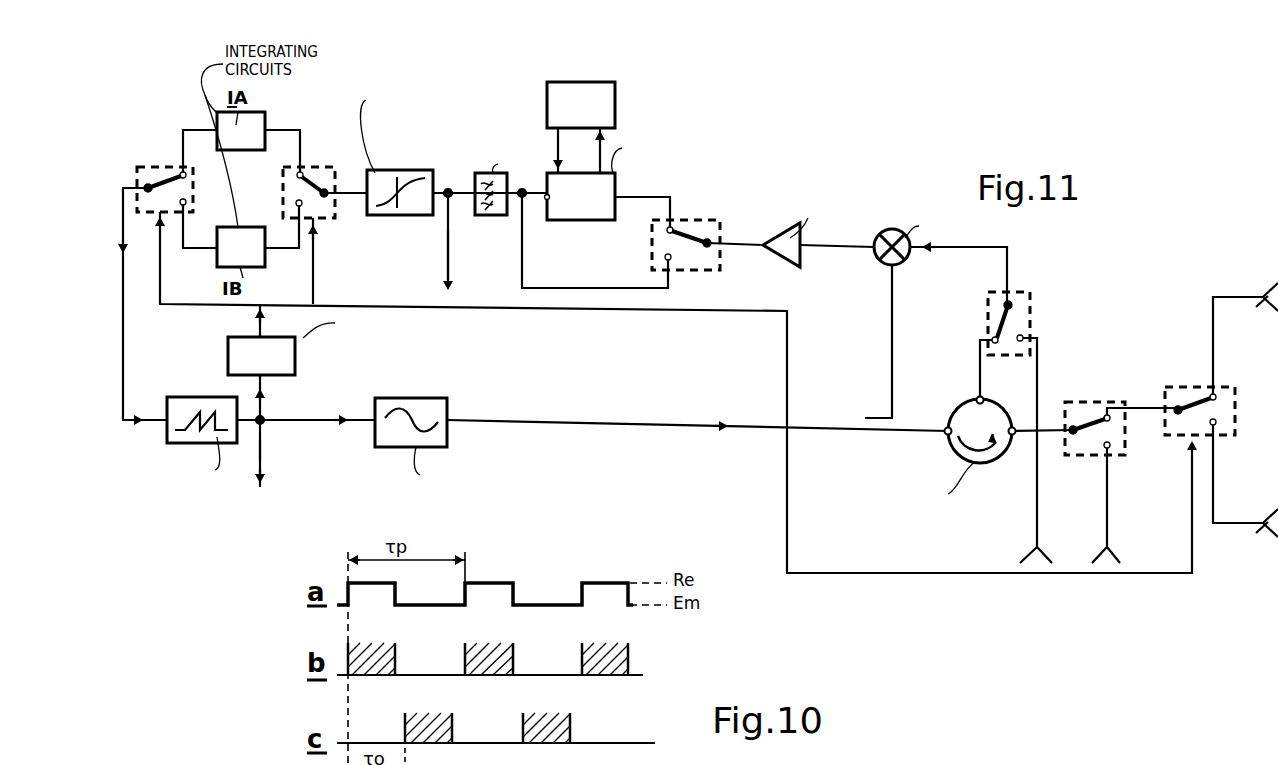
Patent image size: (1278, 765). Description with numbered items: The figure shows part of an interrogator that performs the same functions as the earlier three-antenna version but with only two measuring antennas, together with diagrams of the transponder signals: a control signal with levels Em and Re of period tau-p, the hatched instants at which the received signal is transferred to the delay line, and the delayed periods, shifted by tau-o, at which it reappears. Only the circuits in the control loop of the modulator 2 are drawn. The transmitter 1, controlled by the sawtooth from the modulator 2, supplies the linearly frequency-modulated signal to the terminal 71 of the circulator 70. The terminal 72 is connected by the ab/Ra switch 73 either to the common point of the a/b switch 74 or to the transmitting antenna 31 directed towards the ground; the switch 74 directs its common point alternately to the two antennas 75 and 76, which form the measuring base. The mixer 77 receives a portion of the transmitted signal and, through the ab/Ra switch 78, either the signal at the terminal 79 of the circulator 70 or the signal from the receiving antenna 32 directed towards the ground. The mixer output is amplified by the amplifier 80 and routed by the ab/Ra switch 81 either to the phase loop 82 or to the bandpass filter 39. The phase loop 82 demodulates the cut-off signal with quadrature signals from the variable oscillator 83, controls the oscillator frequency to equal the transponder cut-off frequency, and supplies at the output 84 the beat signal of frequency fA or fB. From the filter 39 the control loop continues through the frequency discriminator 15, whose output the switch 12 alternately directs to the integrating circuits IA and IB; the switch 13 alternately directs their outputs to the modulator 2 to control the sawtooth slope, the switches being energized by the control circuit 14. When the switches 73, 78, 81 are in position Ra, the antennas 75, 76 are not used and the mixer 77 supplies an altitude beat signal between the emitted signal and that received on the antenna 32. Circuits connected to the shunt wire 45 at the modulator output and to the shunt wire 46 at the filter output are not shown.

The transmitter 1 is at (410, 410).
The modulator 2 is at (188, 405).
The switch 12 is at (318, 167).
The switch 13 is at (160, 167).
The control circuit 14 is at (280, 358).
The frequency discriminator 15 is at (380, 172).
The transmitting antenna 31 is at (1112, 553).
The receiving antenna 32 is at (1027, 554).
The bandpass filter 39 is at (481, 173).
The shunt wire 45 is at (262, 446).
The shunt wire 46 is at (449, 230).
The circulator 70 is at (955, 450).
The terminal 71 is at (947, 429).
The terminal 72 is at (1012, 436).
The ab/Ra switch 73 is at (1067, 402).
The a/b switch 74 is at (1185, 387).
The antenna 75 is at (1270, 290).
The antenna 76 is at (1270, 534).
The mixer circuit 77 is at (895, 229).
The ab/Ra switch 78 is at (1020, 300).
The terminal 79 is at (978, 399).
The amplifier 80 is at (790, 230).
The ab/Ra switch 81 is at (710, 222).
The phase loop circuit 82 is at (603, 190).
The variable oscillator 83 is at (610, 108).
The output 84 is at (548, 195).